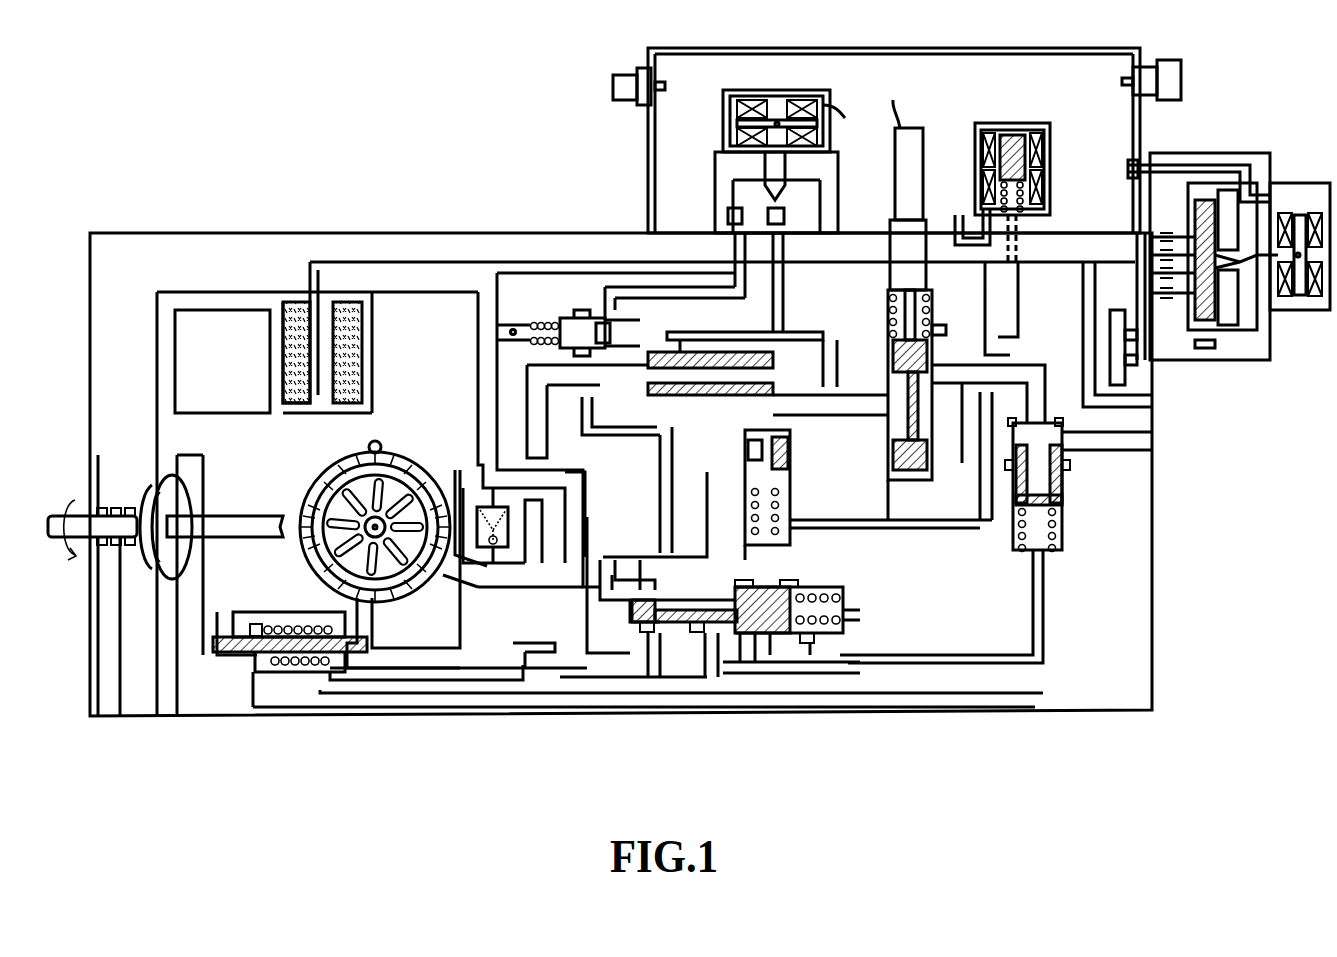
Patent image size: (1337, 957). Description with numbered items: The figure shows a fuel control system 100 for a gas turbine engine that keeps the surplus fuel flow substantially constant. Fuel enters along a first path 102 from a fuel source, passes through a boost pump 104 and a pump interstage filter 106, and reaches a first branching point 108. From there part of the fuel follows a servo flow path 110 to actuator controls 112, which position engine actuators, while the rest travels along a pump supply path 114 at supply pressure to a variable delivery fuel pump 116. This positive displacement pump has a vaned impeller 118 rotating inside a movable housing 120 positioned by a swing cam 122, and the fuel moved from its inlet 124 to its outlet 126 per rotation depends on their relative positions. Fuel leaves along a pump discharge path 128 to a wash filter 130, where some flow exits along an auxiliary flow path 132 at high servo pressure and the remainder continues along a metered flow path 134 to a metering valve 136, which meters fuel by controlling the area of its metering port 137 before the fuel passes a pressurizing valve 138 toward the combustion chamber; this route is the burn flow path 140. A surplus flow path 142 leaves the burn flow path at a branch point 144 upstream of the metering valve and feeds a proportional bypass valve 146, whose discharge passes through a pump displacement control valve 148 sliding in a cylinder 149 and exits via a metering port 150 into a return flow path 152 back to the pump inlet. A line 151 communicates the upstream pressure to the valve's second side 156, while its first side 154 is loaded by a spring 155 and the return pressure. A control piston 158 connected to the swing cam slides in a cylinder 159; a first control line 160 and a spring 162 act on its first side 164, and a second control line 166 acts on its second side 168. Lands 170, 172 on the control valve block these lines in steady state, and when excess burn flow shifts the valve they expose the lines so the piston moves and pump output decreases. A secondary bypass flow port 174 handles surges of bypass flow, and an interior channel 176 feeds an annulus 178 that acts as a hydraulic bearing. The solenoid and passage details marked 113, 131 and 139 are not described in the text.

The fuel control system 100 is at (117, 185).
The first path 102 is at (163, 695).
The boost pump 104 is at (162, 557).
The pump interstage filter 106 is at (297, 300).
The first branching point 108 is at (490, 280).
The servo flow path 110 is at (585, 318).
The actuator controls 112 is at (1235, 143).
The solenoid 113 is at (780, 161).
The pump supply path 114 is at (478, 305).
The variable delivery fuel pump 116 is at (337, 481).
The vaned impeller 118 is at (302, 502).
The movable housing 120 is at (308, 474).
The swing cam 122 is at (373, 608).
The inlet 124 is at (450, 427).
The outlet 126 is at (483, 622).
The pump discharge path 128 is at (643, 388).
The wash filter 130 is at (732, 335).
The passage 131 is at (1137, 444).
The auxiliary flow path 132 is at (795, 409).
The metered flow path 134 is at (775, 397).
The metering valve 136 is at (892, 317).
The metering port 137 is at (940, 367).
The pressurizing valve 138 is at (1096, 502).
The solenoid 139 is at (1002, 206).
The burn flow path 140 is at (944, 400).
The surplus flow path 142 is at (721, 452).
The branch point 144 is at (790, 432).
The proportional bypass valve 146 is at (797, 495).
The pump displacement control valve 148 is at (734, 601).
The cylinder 149 is at (645, 592).
The metering port 150 is at (678, 669).
The line 151 is at (598, 562).
The return flow path 152 is at (568, 745).
The first side 154 is at (812, 668).
The spring 155 is at (830, 642).
The second side 156 is at (630, 624).
The control piston 158 is at (263, 617).
The cylinder 159 is at (218, 745).
The first control line 160 is at (425, 693).
The spring 162 is at (322, 630).
The first side 164 is at (300, 660).
The second control line 166 is at (460, 708).
The second side 168 is at (237, 632).
The land 170 is at (660, 680).
The land 172 is at (705, 690).
The secondary bypass flow port 174 is at (770, 690).
The interior channel 176 is at (745, 607).
The annulus 178 is at (800, 592).